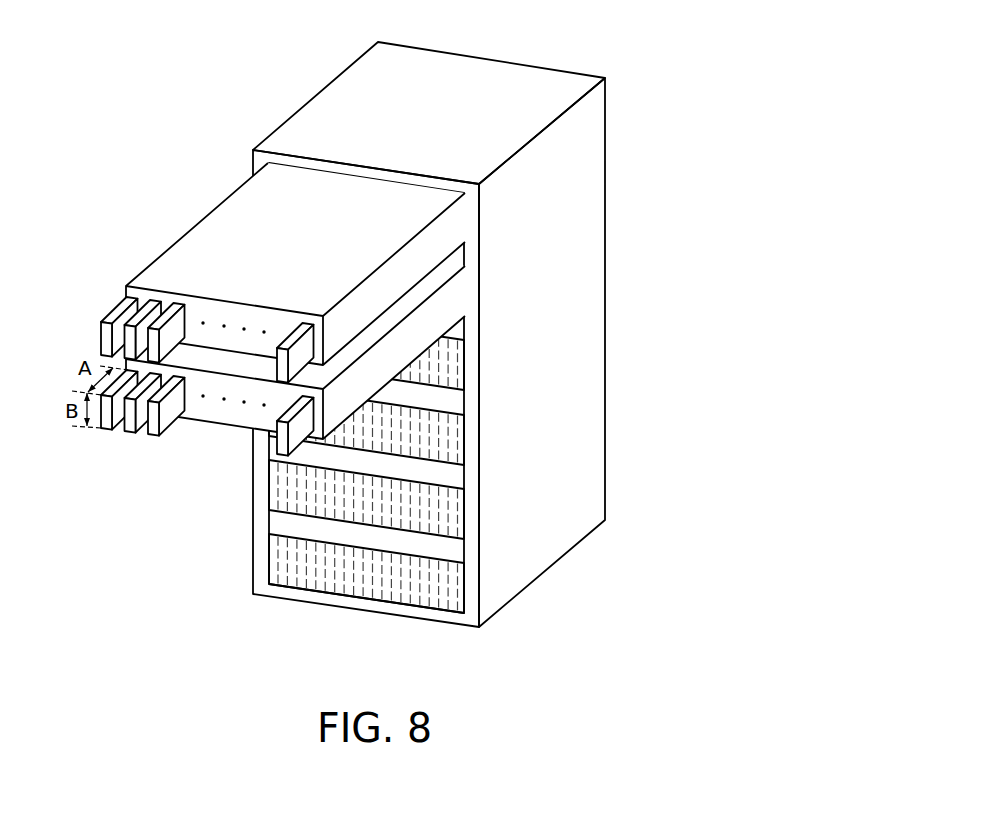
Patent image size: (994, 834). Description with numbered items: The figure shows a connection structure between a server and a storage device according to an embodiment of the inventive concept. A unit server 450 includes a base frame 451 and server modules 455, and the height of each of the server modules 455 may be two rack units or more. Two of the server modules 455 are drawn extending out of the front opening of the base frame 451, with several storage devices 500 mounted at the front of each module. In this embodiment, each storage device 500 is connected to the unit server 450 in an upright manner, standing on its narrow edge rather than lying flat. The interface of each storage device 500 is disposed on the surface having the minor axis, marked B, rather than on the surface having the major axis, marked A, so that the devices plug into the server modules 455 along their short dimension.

The unit server 450 is at (373, 321).
The base frame 451 is at (605, 285).
The server module 455 is at (187, 232).
The storage device 500 is at (112, 314).